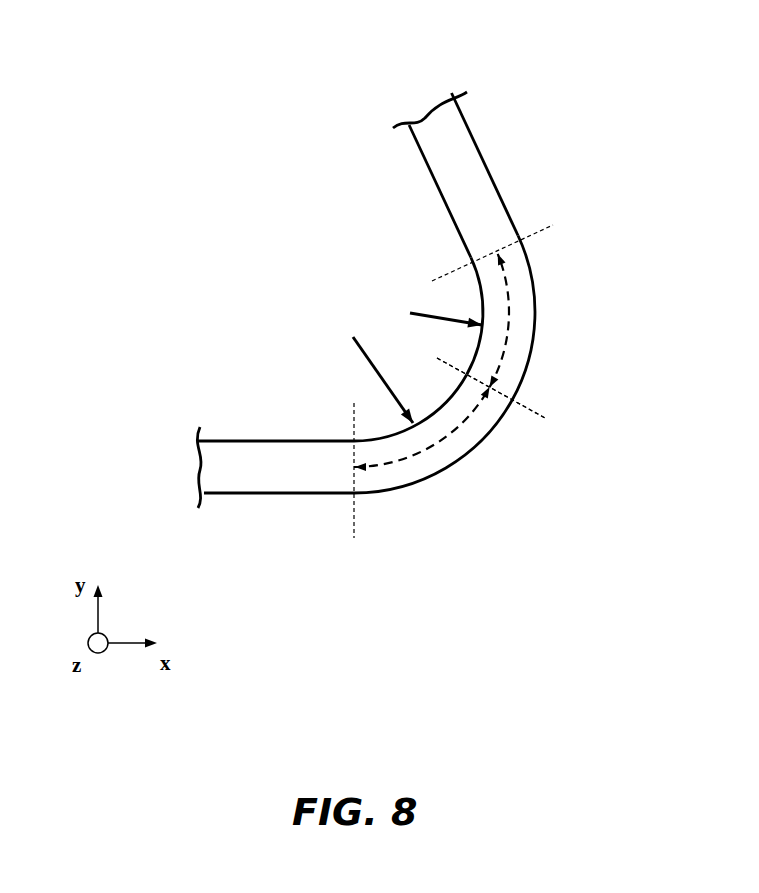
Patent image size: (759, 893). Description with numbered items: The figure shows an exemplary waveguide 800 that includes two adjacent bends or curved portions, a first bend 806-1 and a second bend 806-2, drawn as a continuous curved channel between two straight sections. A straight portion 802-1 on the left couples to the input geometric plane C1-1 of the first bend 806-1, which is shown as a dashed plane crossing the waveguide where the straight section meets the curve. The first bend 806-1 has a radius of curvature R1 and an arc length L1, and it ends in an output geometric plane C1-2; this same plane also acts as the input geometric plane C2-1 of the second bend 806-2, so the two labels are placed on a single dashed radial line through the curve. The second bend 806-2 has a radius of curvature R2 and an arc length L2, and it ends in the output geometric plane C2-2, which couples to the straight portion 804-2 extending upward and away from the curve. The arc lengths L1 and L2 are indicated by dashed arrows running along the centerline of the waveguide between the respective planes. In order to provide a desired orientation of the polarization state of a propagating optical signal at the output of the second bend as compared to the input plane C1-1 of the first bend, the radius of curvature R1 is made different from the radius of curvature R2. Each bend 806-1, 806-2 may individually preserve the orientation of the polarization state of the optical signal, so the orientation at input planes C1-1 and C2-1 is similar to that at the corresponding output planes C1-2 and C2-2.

The waveguide 800 is at (165, 63).
The straight portion 802-1 is at (248, 472).
The straight portion 804-2 is at (462, 158).
The first bend 806-1 is at (448, 487).
The second bend 806-2 is at (547, 323).
The radius of curvature R1 is at (363, 352).
The radius of curvature R2 is at (410, 313).
The arc length L1 is at (452, 435).
The arc length L2 is at (537, 320).
The input geometric plane C1-1 is at (355, 518).
The output geometric plane C1-2 is at (532, 415).
The input geometric plane C2-1 is at (523, 408).
The output geometric plane C2-2 is at (542, 227).